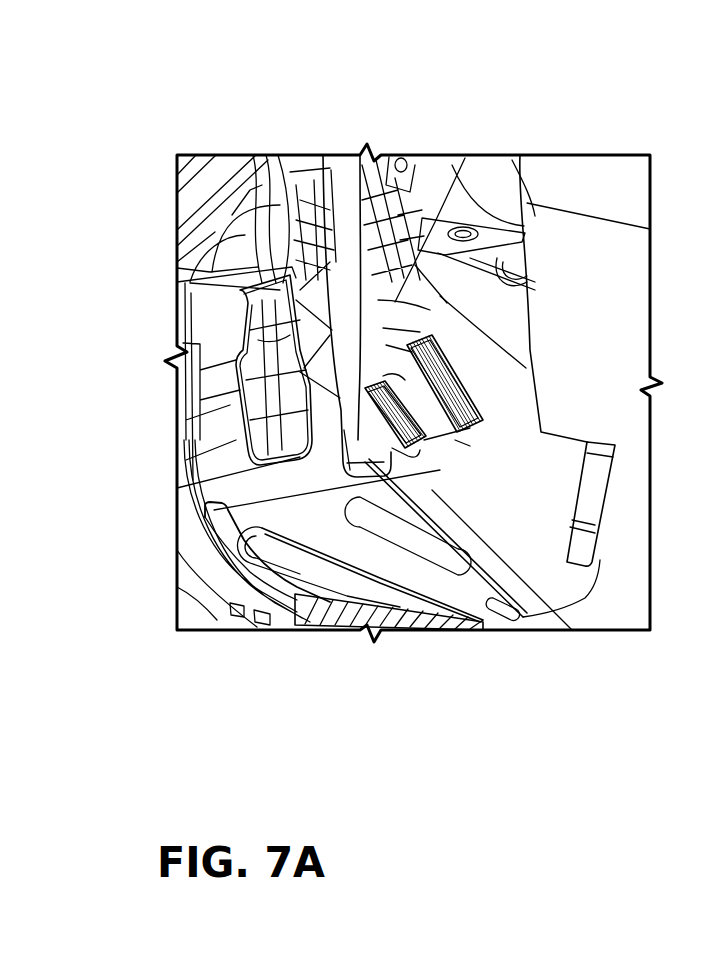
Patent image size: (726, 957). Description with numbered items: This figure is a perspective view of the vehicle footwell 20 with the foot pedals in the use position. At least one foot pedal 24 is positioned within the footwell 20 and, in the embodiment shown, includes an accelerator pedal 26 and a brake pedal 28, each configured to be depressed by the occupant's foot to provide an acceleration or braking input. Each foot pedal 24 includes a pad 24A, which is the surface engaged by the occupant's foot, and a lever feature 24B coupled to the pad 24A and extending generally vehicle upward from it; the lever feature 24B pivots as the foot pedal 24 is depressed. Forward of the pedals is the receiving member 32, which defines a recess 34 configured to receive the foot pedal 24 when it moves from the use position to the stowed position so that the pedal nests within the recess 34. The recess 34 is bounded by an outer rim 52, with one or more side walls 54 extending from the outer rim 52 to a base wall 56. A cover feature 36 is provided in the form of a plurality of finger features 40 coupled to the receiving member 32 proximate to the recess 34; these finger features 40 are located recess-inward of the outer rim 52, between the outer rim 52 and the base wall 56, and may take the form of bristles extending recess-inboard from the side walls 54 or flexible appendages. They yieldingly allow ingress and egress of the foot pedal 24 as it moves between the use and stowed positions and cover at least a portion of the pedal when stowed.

The footwell 20 is at (556, 490).
The foot pedal 24 is at (445, 300).
The pad 24A is at (447, 350).
The lever feature 24B is at (345, 192).
The accelerator pedal 26 is at (484, 434).
The brake pedal 28 is at (413, 460).
The receiving member 32 is at (216, 484).
The recess 34 is at (212, 272).
The cover feature 36 is at (262, 424).
The finger features 40 is at (287, 393).
The outer rim 52 is at (305, 437).
The side walls 54 is at (276, 178).
The base wall 56 is at (206, 162).